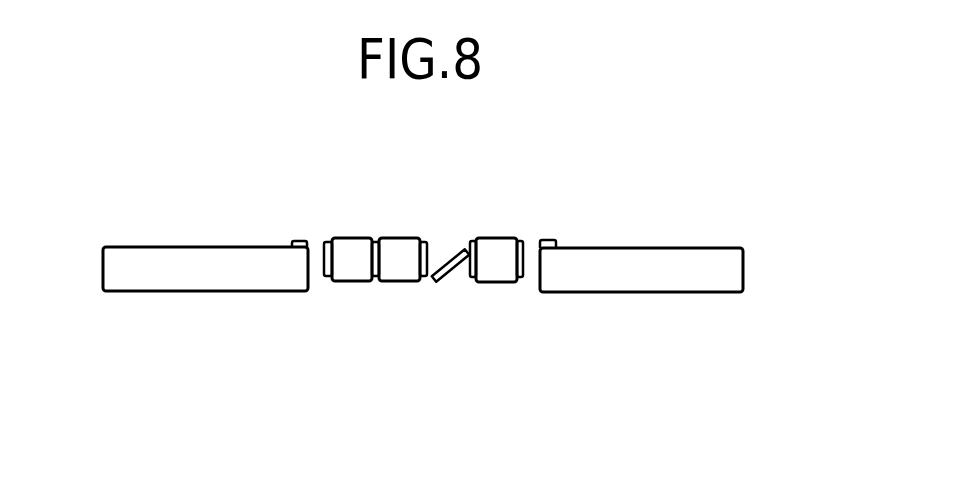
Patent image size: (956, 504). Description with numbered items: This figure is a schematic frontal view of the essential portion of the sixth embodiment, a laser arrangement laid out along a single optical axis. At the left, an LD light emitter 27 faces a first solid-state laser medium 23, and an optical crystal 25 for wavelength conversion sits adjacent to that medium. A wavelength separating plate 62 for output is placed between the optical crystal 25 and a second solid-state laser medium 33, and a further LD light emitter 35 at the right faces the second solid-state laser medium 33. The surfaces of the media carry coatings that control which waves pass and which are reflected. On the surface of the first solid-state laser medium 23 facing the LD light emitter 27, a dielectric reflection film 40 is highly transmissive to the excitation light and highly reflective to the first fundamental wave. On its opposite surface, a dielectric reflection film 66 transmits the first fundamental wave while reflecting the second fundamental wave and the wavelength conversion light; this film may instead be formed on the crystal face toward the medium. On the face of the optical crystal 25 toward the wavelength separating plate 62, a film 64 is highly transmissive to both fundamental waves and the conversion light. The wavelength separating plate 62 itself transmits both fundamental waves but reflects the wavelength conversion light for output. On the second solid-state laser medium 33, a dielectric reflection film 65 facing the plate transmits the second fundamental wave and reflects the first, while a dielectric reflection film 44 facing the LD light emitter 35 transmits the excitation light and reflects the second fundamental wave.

The LD light emitter 27 is at (207, 246).
The LD light emitter 35 is at (607, 248).
The dielectric reflection film 40 is at (323, 241).
The first solid-state laser medium 23 is at (345, 283).
The dielectric reflection film 66 is at (375, 283).
The optical crystal for wavelength conversion 25 is at (395, 238).
The film 64 is at (433, 283).
The wavelength separating plate for output 62 is at (450, 262).
The dielectric reflection film 65 is at (473, 283).
The second solid-state laser medium 33 is at (497, 238).
The dielectric reflection film 44 is at (522, 283).